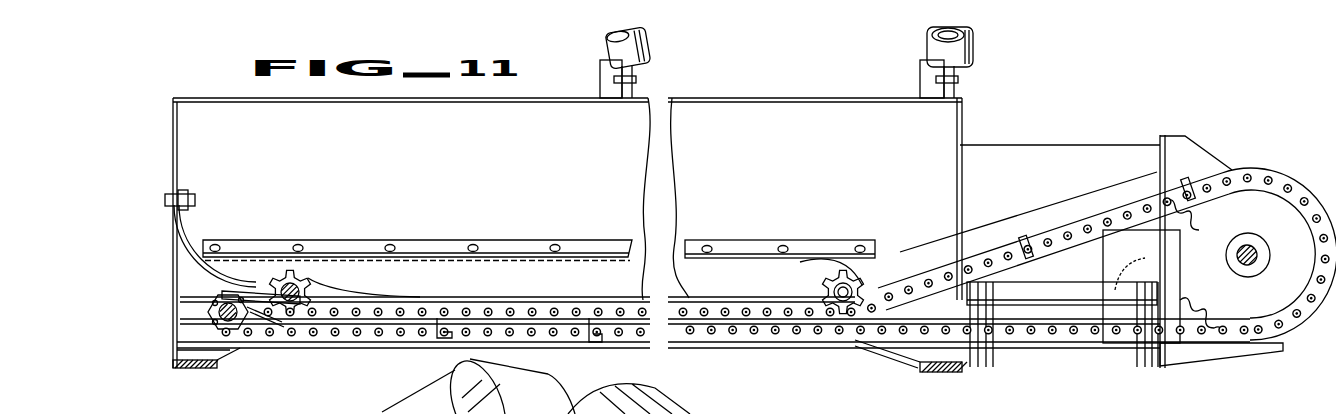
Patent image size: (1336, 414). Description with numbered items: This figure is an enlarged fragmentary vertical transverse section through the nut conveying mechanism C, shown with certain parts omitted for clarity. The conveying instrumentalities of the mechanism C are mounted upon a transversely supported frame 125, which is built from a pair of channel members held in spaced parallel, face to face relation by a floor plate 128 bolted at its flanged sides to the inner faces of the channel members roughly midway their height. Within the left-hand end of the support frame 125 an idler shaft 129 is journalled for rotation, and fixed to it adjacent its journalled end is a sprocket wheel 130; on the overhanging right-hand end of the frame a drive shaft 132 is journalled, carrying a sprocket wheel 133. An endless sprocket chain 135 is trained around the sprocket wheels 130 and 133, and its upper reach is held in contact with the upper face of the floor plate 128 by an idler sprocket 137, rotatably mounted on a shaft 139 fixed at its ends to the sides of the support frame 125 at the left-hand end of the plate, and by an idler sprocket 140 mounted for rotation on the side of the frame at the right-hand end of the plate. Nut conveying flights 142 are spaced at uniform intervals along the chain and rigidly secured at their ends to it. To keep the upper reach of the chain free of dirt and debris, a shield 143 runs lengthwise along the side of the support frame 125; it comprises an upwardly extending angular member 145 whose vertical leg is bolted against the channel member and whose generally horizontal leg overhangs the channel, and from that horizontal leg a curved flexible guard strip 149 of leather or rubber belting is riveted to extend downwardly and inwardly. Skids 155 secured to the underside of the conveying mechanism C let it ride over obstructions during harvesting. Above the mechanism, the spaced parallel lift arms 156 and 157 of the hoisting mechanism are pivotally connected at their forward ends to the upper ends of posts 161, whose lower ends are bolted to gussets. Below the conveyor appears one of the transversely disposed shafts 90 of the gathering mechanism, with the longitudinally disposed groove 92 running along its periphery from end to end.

The shaft 90 is at (470, 402).
The groove 92 is at (565, 384).
The support frame 125 is at (200, 368).
The floor plate 128 is at (522, 282).
The idler shaft 129 is at (228, 323).
The sprocket wheel 130 is at (250, 318).
The drive shaft 132 is at (1248, 266).
The sprocket wheel 133 is at (1268, 219).
The endless sprocket chain 135 is at (765, 337).
The idler sprocket 137 is at (300, 276).
The shaft 139 is at (310, 283).
The idler sprocket 140 is at (830, 283).
The nut conveying flight 142 is at (410, 298).
The shield 143 is at (688, 249).
The angular member 145 is at (755, 243).
The guard strip 149 is at (718, 272).
The skid 155 is at (190, 368).
The lift arm 156 is at (652, 42).
The lift arm 157 is at (975, 42).
The post 161 is at (608, 84).
The nut conveying mechanism C is at (1062, 146).